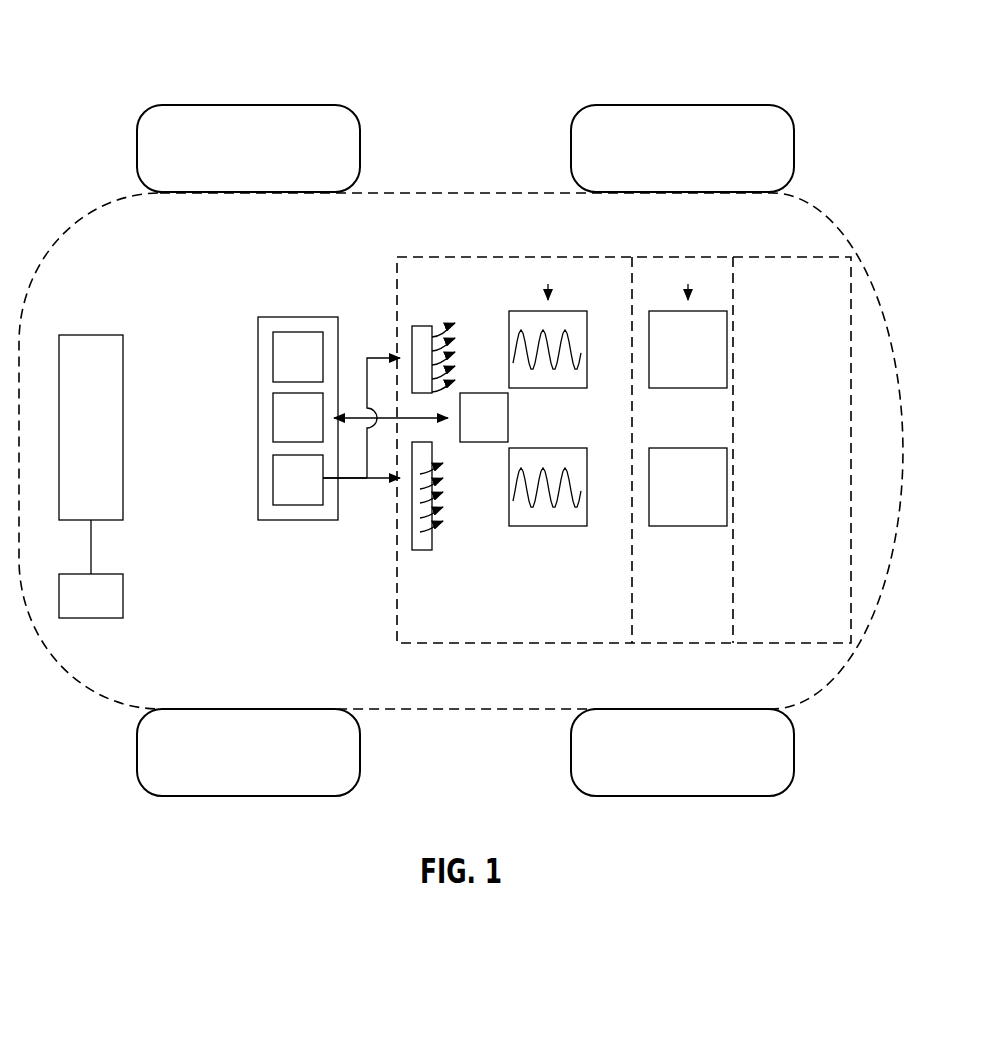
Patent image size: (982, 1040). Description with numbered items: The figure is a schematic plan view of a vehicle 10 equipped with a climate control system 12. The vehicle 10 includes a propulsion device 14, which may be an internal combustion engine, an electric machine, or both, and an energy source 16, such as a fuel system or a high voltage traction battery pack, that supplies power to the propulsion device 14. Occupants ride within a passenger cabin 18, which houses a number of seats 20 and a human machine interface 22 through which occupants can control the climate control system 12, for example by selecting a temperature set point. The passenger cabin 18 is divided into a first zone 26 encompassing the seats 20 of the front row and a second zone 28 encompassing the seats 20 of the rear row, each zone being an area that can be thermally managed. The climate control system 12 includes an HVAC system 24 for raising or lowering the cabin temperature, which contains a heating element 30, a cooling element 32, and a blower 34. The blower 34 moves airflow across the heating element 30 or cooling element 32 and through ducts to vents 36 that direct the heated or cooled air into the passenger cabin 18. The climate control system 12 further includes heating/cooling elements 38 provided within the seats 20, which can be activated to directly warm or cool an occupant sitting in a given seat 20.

The vehicle 10 is at (461, 60).
The climate control system 12 is at (287, 396).
The propulsion device 14 is at (78, 443).
The energy source 16 is at (78, 610).
The passenger cabin 18 is at (565, 246).
The seat 20 is at (518, 257).
The human machine interface 22 is at (471, 433).
The heating, ventilation, and air conditioning system 24 is at (280, 401).
The first zone 26 is at (499, 617).
The second zone 28 is at (661, 617).
The heating element 30 is at (285, 372).
The cooling element 32 is at (285, 433).
The blower 34 is at (285, 495).
The vent 36 is at (421, 326).
The heating/cooling element 38 is at (553, 370).